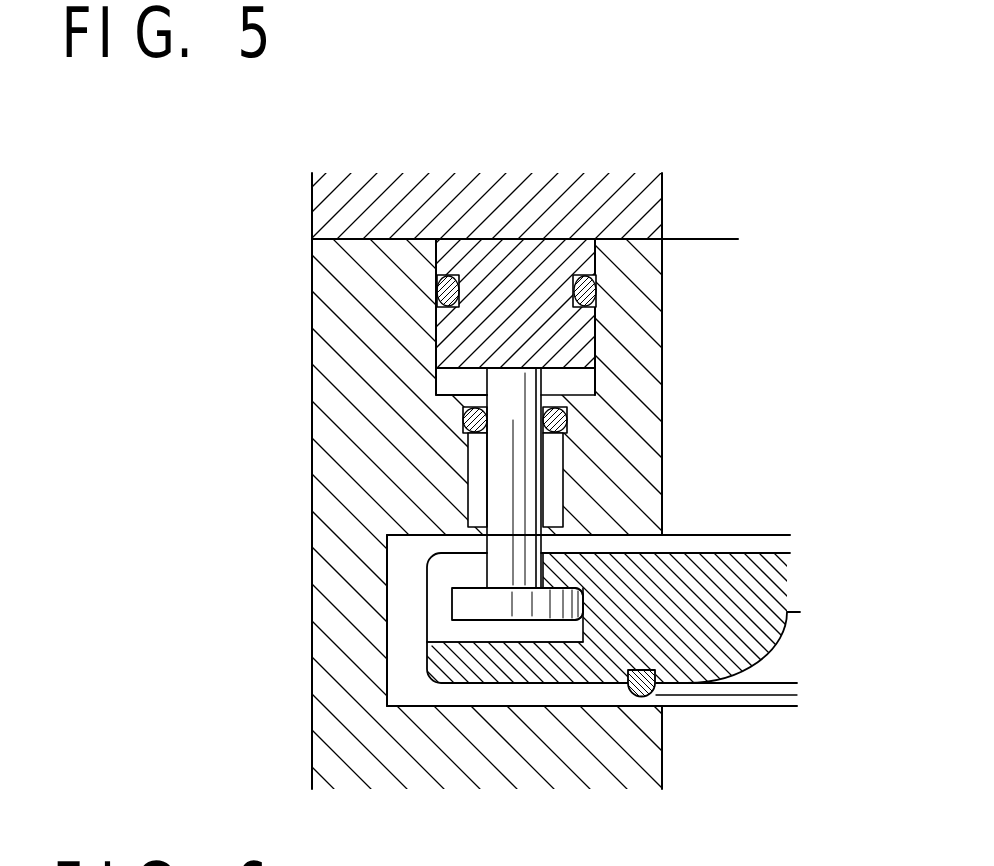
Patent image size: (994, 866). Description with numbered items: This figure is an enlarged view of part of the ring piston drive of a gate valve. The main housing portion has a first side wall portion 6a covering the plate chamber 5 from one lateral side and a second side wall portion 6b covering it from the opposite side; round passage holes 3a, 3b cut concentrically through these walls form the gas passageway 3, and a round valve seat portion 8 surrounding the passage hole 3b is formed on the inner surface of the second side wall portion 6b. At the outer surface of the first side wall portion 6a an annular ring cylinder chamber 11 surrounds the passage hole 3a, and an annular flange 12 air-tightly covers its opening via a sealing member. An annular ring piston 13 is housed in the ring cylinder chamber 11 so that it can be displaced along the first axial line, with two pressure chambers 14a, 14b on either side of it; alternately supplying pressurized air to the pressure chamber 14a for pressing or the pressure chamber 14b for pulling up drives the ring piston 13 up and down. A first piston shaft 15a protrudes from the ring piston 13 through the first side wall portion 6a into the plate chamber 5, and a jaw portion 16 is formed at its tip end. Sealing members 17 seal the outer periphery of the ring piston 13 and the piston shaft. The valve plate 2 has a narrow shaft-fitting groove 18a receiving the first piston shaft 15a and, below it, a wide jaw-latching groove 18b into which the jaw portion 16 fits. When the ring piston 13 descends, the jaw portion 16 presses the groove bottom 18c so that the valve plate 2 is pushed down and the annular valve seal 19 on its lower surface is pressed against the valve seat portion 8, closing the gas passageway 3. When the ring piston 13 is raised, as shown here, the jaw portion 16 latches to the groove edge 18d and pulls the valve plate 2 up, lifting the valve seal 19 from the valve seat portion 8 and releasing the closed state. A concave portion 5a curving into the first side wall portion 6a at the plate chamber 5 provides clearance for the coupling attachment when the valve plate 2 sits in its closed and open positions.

The valve plate 2 is at (733, 578).
The gas passageway 3 is at (757, 402).
The passage hole 3a is at (662, 328).
The passage hole 3b is at (663, 760).
The plate chamber 5 is at (482, 695).
The concave portion 5a is at (700, 535).
The first side wall portion 6a is at (628, 282).
The second side wall portion 6b is at (532, 747).
The valve seat portion 8 is at (633, 703).
The ring cylinder chamber 11 is at (577, 262).
The annular flange 12 is at (325, 215).
The ring piston 13 is at (512, 268).
The pressure chamber 14a is at (470, 235).
The pressure chamber 14b is at (452, 385).
The first piston shaft 15a is at (508, 465).
The jaw portion 16 is at (450, 567).
The sealing member 17 is at (433, 295).
The shaft-fitting groove 18a is at (470, 526).
The jaw-latching groove 18b is at (472, 603).
The groove bottom 18c is at (515, 633).
The groove edge 18d is at (585, 600).
The valve seal 19 is at (655, 698).